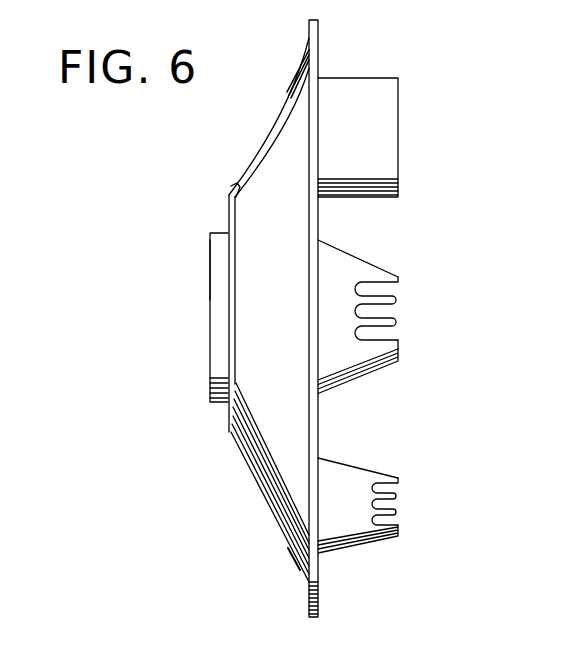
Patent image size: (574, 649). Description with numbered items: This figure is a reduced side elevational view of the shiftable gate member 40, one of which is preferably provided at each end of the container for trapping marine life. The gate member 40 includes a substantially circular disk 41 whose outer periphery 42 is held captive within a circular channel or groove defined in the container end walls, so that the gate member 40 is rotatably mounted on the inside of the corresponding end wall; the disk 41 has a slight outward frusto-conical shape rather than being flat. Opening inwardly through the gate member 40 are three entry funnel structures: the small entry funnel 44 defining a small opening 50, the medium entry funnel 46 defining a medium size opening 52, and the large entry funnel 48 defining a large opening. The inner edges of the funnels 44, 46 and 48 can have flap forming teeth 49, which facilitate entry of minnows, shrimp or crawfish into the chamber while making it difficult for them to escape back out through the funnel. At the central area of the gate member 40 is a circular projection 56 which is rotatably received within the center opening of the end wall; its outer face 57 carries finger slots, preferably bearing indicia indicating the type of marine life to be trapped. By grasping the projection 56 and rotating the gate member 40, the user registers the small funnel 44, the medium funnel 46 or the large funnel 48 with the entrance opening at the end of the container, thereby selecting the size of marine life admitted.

The gate member 40 is at (237, 465).
The circular disk 41 is at (290, 148).
The outer periphery 42 is at (311, 615).
The entry funnel 44 is at (383, 540).
The entry funnel 46 is at (380, 368).
The entry funnel 48 is at (388, 140).
The flap forming teeth 49 is at (388, 305).
The small opening 50 is at (393, 522).
The medium size opening 52 is at (390, 345).
The circular projection 56 is at (218, 340).
The outer face 57 is at (210, 262).